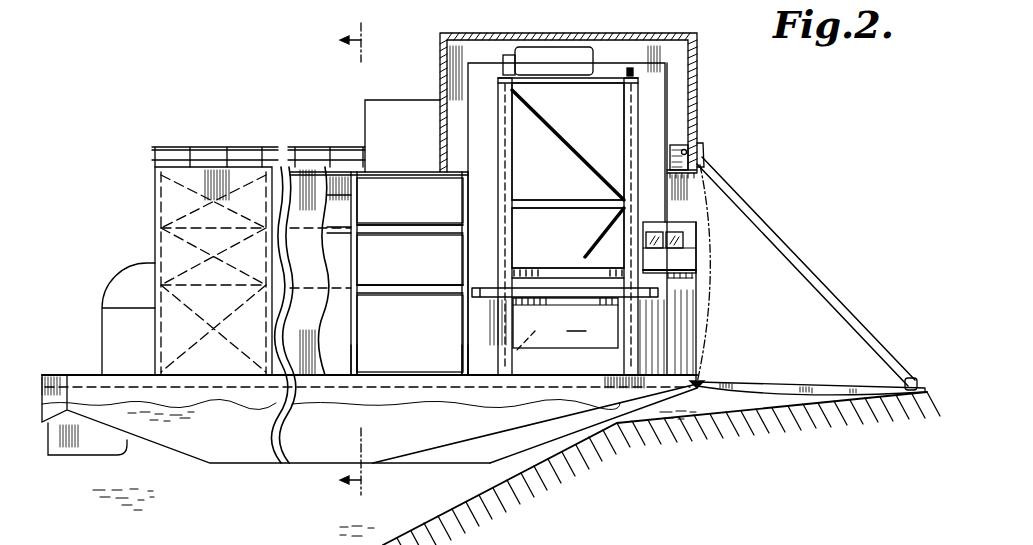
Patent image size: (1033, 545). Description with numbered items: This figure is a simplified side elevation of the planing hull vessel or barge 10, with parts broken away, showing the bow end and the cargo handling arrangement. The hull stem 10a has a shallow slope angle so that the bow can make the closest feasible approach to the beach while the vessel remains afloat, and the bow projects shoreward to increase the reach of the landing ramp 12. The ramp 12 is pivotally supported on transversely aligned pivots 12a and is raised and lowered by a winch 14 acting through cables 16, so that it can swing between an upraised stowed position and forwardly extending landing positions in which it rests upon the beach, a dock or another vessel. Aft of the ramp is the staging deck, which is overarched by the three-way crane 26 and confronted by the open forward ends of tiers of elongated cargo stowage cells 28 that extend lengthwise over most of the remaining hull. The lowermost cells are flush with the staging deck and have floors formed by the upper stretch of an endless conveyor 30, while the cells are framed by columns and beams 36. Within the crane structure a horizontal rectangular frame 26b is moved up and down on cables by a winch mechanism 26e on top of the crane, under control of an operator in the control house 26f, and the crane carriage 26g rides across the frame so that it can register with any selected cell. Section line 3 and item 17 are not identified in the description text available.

The section line 3- 3 is at (361, 259).
The barge 10 is at (233, 450).
The hull stem 10a is at (557, 442).
The landing ramp 12 is at (805, 383).
The pivots 12a is at (712, 371).
The winch 14 is at (680, 143).
The cables 16 is at (750, 208).
The level indicator 17 is at (533, 332).
The three-way crane 26 is at (556, 182).
The horizontal rectangular frame 26b is at (550, 270).
The winch mechanism 26e is at (553, 55).
The control house 26f is at (687, 257).
The crane carriage 26g is at (663, 291).
The cargo stowage cells 28 is at (421, 216).
The conveyor 30 is at (576, 376).
The beams 36 is at (378, 290).